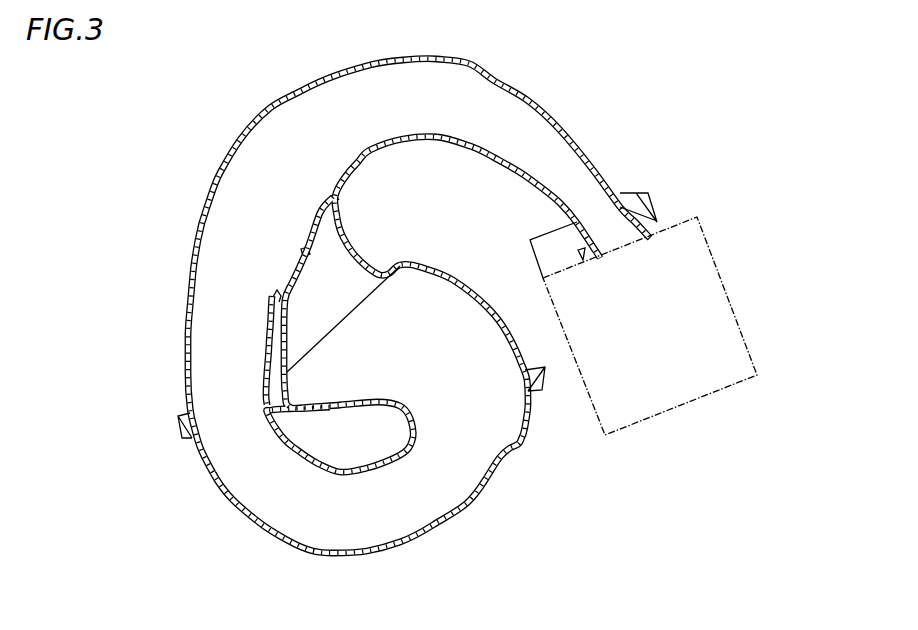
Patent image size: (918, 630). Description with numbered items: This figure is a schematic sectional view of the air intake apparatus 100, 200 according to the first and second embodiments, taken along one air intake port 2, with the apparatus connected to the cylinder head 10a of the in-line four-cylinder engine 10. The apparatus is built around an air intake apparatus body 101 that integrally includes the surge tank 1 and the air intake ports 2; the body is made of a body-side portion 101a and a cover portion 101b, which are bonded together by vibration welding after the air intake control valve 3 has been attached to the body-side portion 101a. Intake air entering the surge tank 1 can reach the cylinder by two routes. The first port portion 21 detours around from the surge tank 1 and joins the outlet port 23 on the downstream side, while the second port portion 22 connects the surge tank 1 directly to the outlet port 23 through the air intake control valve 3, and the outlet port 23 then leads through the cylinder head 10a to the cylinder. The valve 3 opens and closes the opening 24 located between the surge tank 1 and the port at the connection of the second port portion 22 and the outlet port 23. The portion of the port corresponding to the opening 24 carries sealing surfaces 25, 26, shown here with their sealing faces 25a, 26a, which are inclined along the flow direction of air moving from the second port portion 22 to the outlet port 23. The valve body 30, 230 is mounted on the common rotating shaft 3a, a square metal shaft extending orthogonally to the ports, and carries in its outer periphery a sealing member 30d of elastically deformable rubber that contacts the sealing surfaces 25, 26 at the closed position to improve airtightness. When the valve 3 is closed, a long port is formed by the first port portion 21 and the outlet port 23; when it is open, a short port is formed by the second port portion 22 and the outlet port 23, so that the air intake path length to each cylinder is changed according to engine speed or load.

The surge tank 1 is at (416, 310).
The air intake port 2 is at (371, 309).
The air intake control valve 3 is at (290, 218).
The rotating shaft 3a is at (270, 268).
The engine 10 is at (678, 408).
The cylinder head 10a is at (648, 344).
The first port portion 21 is at (260, 495).
The second port portion 22 is at (345, 278).
The outlet port 23 is at (527, 125).
The opening 24 is at (302, 250).
The sealing surface 25 is at (395, 202).
The end tip 25a is at (338, 211).
The sealing surface 26 is at (187, 284).
The engaging hook 26a is at (273, 297).
The valve body 30 is at (274, 266).
The fixing member variant 230 is at (274, 266).
The sealing member 30d is at (234, 235).
The air intake apparatus 100 is at (427, 309).
The earphone device variant 200 is at (427, 309).
The air intake apparatus body 101 is at (416, 310).
The body-side portion 101a is at (397, 547).
The cover portion 101b is at (338, 72).